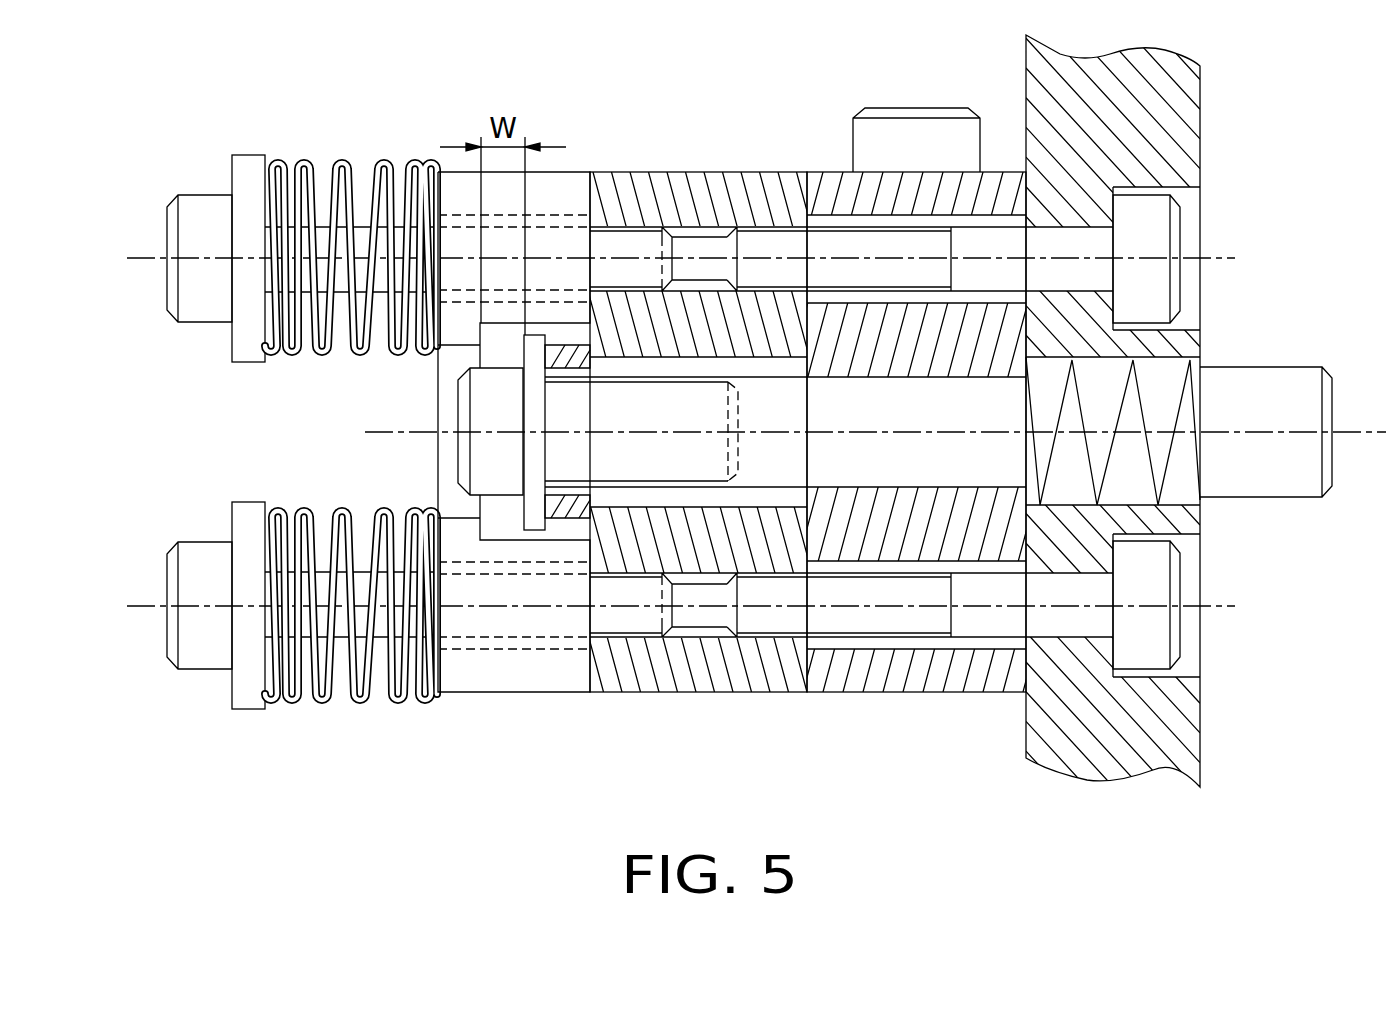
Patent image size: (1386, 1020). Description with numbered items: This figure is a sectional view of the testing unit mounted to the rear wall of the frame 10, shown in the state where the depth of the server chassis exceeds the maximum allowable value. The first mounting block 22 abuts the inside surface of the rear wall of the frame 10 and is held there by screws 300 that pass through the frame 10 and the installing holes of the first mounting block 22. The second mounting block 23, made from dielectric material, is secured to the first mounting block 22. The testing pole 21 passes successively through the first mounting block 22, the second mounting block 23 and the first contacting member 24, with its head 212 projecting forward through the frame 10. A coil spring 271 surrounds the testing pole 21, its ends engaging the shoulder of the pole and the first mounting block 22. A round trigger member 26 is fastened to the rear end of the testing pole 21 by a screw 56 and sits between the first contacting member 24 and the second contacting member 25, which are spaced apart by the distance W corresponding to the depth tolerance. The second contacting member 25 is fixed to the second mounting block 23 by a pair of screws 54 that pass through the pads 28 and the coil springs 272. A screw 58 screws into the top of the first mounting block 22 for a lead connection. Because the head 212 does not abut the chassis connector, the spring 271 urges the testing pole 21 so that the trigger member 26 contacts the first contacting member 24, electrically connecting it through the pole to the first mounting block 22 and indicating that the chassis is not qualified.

The frame 10 is at (1160, 138).
The testing pole 21 is at (865, 462).
The first mounting block 22 is at (835, 182).
The second mounting block 23 is at (683, 195).
The first contacting member 24 is at (565, 508).
The second contacting member 25 is at (470, 673).
The trigger member 26 is at (536, 515).
The pads 28 is at (253, 183).
The screws 54 is at (200, 210).
The screw 56 is at (490, 417).
The screw 58 is at (900, 130).
The head 212 is at (1290, 382).
The coil spring 271 is at (1197, 448).
The coil springs 272 is at (374, 185).
The screws 300 is at (1155, 230).